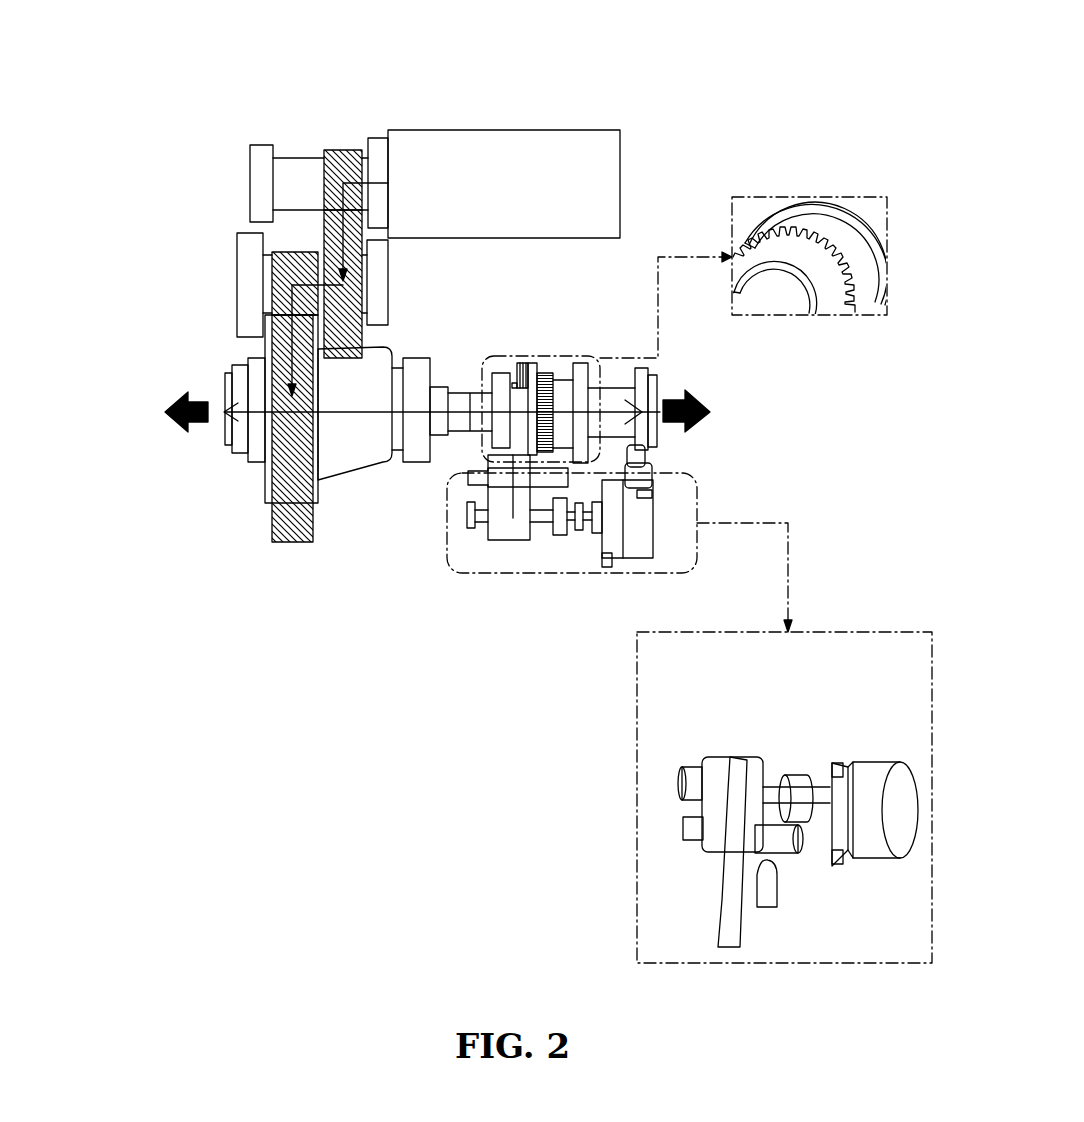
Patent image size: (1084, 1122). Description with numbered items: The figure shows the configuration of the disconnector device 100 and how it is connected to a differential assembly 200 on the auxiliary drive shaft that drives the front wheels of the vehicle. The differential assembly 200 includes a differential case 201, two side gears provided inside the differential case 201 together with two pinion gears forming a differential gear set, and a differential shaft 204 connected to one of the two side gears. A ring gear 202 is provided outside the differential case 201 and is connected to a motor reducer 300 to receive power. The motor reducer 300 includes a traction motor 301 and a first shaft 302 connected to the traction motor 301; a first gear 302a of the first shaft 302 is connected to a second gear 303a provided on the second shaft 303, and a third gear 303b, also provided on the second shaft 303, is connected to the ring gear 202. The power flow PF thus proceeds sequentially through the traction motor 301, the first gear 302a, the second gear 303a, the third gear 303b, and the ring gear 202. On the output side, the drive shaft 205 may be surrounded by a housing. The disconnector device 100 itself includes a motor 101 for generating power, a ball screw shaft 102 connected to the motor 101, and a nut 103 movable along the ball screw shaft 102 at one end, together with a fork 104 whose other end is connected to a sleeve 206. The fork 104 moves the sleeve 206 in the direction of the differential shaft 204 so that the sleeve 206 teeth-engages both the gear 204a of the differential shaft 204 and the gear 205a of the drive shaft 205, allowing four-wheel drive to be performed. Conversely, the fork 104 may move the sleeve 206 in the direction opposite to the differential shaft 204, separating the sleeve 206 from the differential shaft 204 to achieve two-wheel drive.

The disconnector device 100 is at (570, 586).
The motor 101 is at (642, 560).
The ball screw shaft 102 is at (480, 521).
The nut 103 is at (766, 775).
The fork 104 is at (522, 450).
The differential assembly 200 is at (338, 483).
The differential case 201 is at (378, 460).
The ring gear 202 is at (289, 542).
The differential shaft 204 is at (477, 390).
The gear of the differential shaft 204a is at (513, 368).
The drive shaft 205 is at (563, 382).
The gear of the drive shaft 205a is at (537, 368).
The sleeve 206 is at (546, 372).
The motor reducer 300 is at (312, 100).
The traction motor 301 is at (500, 143).
The first shaft 302 is at (293, 158).
The first gear 302a is at (347, 152).
The second shaft 303 is at (383, 258).
The second gear 303a is at (353, 337).
The third gear 303b is at (283, 251).
The power flow PF is at (268, 345).